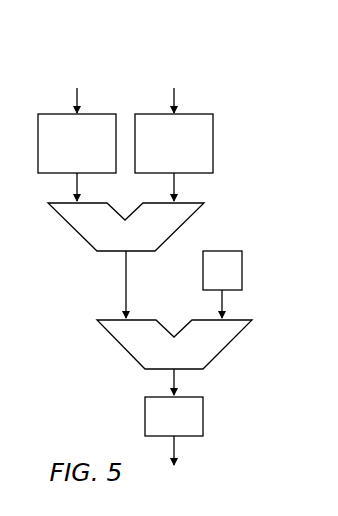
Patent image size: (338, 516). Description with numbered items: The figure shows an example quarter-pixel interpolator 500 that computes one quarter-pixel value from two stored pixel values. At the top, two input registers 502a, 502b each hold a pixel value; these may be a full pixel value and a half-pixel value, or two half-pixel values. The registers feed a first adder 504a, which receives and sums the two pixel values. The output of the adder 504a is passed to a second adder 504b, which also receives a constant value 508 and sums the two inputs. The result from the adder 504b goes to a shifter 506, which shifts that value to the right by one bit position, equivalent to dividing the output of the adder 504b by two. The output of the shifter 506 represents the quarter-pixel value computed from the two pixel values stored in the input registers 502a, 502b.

The quarter-pixel interpolator 500 is at (100, 64).
The input register 502a is at (52, 113).
The input register 502b is at (197, 113).
The adder 504a is at (70, 228).
The adder 504b is at (118, 345).
The shifter 506 is at (205, 419).
The constant value 508 is at (244, 269).